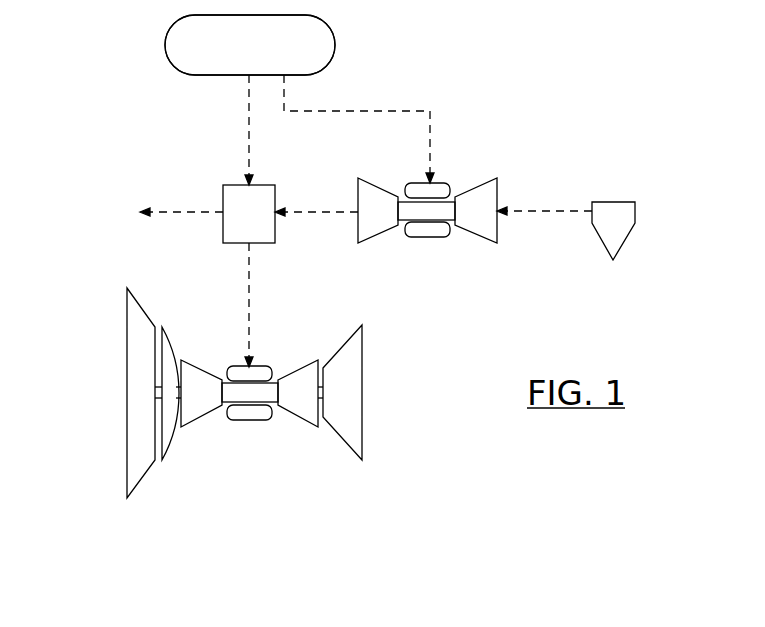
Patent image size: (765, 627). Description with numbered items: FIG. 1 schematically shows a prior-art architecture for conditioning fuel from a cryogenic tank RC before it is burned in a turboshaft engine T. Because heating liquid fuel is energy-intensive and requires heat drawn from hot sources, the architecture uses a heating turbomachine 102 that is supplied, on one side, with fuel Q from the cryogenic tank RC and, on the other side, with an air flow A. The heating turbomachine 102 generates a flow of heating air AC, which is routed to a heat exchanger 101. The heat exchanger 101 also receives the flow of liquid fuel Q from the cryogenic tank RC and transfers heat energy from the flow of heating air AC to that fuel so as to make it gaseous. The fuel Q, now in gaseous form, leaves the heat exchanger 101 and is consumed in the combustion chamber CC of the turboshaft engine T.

The heat exchanger 101 is at (222, 205).
The heating turbomachine 102 is at (448, 163).
The fuel Q is at (250, 45).
The cryogenic tank RC is at (334, 46).
The flow of heating air AC is at (316, 193).
The air flow A is at (566, 214).
The turboshaft engine T is at (108, 395).
The combustion chamber CC is at (263, 420).